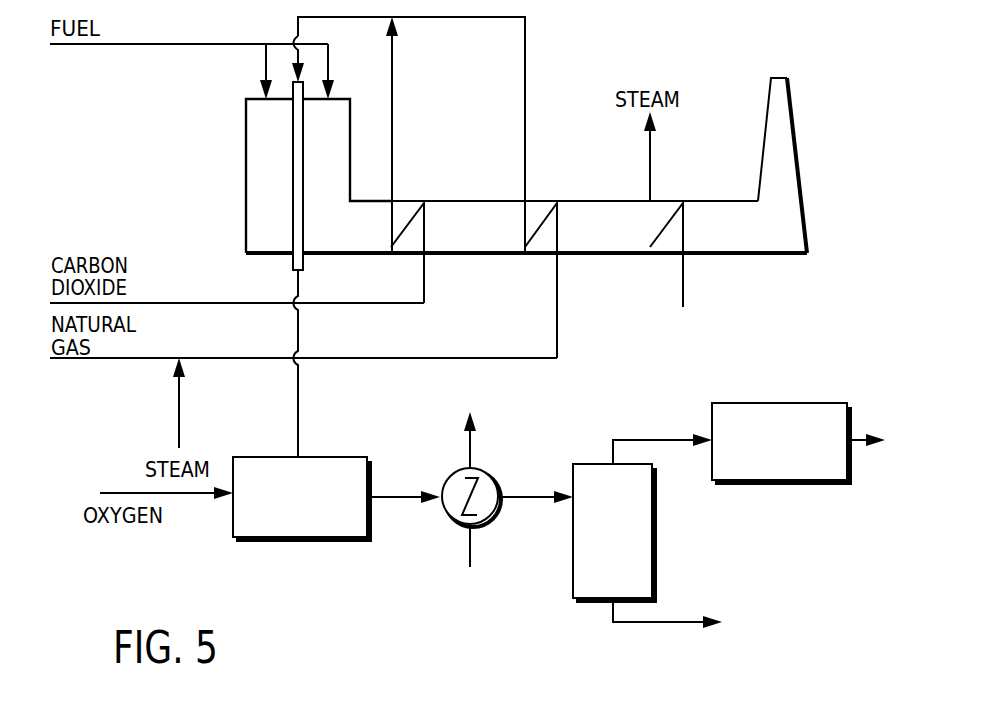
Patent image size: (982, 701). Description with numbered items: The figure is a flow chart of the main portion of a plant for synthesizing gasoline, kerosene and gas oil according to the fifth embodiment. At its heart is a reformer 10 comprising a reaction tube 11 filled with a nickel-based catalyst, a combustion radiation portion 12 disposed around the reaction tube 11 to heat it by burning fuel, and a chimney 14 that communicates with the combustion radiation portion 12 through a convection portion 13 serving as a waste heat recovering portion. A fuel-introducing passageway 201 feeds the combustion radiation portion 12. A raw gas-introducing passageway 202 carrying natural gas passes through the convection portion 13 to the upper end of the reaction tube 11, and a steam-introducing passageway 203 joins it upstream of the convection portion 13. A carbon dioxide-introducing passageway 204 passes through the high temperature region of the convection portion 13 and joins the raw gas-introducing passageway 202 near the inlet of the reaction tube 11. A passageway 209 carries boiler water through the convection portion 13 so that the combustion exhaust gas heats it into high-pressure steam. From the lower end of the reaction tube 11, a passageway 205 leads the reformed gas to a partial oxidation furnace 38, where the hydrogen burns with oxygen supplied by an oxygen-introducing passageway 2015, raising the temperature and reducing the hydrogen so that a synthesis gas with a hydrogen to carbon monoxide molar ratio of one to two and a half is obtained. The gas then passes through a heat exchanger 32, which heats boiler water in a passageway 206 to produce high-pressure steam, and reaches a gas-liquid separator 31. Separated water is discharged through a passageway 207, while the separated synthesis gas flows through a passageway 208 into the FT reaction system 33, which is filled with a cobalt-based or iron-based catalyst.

The reformer 10 is at (214, 160).
The reaction tube 11 is at (297, 133).
The combustion radiation portion 12 is at (247, 199).
The convection portion 13 is at (607, 250).
The chimney 14 is at (787, 148).
The fuel-introducing passageway 201 is at (129, 45).
The raw gas-introducing passageway 202 is at (125, 359).
The steam-introducing passageway 203 is at (181, 413).
The carbon dioxide-introducing passageway 204 is at (344, 304).
The passageway 205 is at (299, 413).
The passageway 206 is at (472, 552).
The passageway 207 is at (618, 0).
The passageway 208 is at (656, 439).
The passageway 209 is at (684, 290).
The oxygen-introducing passageway 2015 is at (183, 494).
The gas-liquid separator 31 is at (654, 531).
The heat exchanger 32 is at (496, 480).
The FT reaction system 33 is at (824, 404).
The partial oxidation furnace 38 is at (353, 531).